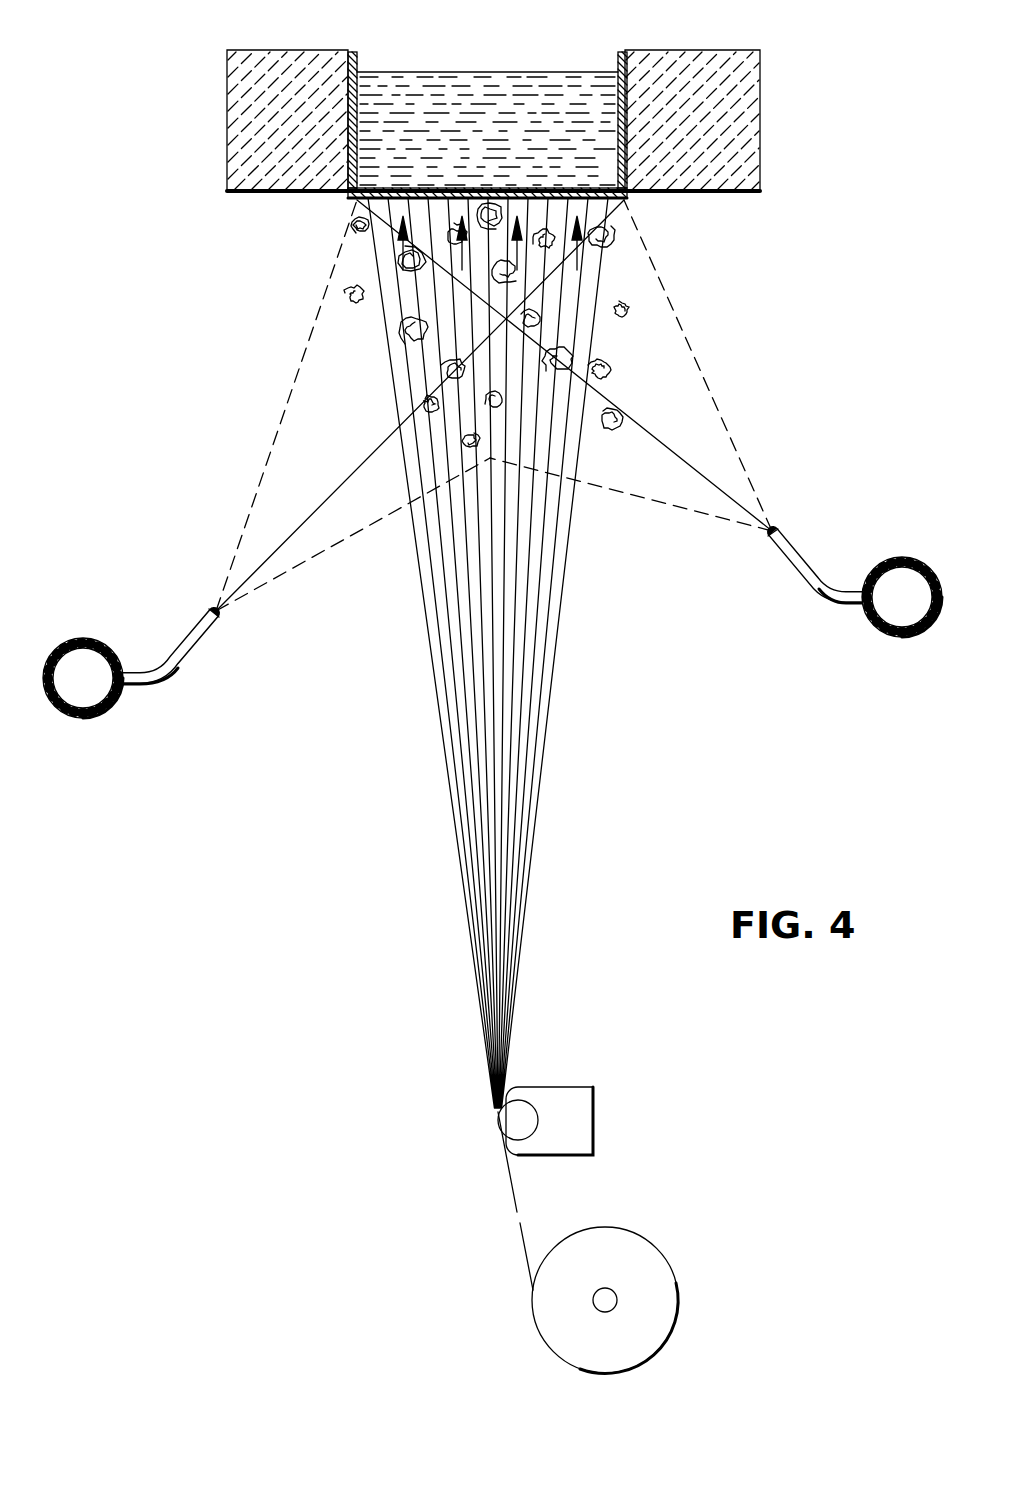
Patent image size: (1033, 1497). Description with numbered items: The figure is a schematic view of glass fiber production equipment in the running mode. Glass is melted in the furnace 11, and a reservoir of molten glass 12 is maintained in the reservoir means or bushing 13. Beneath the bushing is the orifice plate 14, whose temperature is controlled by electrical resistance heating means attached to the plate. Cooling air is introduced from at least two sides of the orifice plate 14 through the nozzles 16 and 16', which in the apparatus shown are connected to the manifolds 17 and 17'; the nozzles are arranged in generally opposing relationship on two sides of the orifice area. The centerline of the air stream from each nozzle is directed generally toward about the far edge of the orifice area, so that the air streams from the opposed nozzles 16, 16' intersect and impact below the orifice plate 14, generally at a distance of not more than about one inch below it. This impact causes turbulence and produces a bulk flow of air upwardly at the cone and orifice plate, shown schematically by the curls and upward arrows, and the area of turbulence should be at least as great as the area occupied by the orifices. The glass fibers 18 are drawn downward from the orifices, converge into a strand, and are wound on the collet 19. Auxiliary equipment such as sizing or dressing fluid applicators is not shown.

The furnace 11 is at (245, 103).
The molten glass 12 is at (460, 77).
The bushing 13 is at (620, 63).
The orifice plate 14 is at (367, 205).
The nozzle 16 is at (609, 401).
The nozzle 16' is at (373, 442).
The manifold 17 is at (902, 565).
The manifold 17' is at (83, 653).
The glass fibers 18 is at (550, 688).
The collet 19 is at (647, 1265).